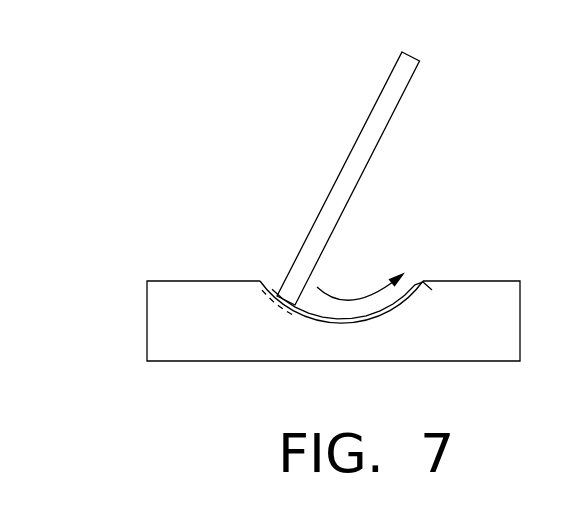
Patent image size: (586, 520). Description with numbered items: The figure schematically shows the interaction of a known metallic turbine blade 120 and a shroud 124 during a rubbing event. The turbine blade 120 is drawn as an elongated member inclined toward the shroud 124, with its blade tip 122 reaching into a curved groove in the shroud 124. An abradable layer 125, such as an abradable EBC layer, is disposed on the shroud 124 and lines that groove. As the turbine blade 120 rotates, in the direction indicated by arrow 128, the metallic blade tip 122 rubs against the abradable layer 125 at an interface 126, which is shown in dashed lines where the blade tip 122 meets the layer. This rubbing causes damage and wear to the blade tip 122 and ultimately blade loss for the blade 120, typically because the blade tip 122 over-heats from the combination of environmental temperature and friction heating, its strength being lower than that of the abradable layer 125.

The turbine blade 120 is at (417, 54).
The blade tip 122 is at (278, 290).
The shroud 124 is at (147, 291).
The abradable layer 125 is at (432, 291).
The interface 126 is at (271, 318).
The arrow 128 is at (333, 295).